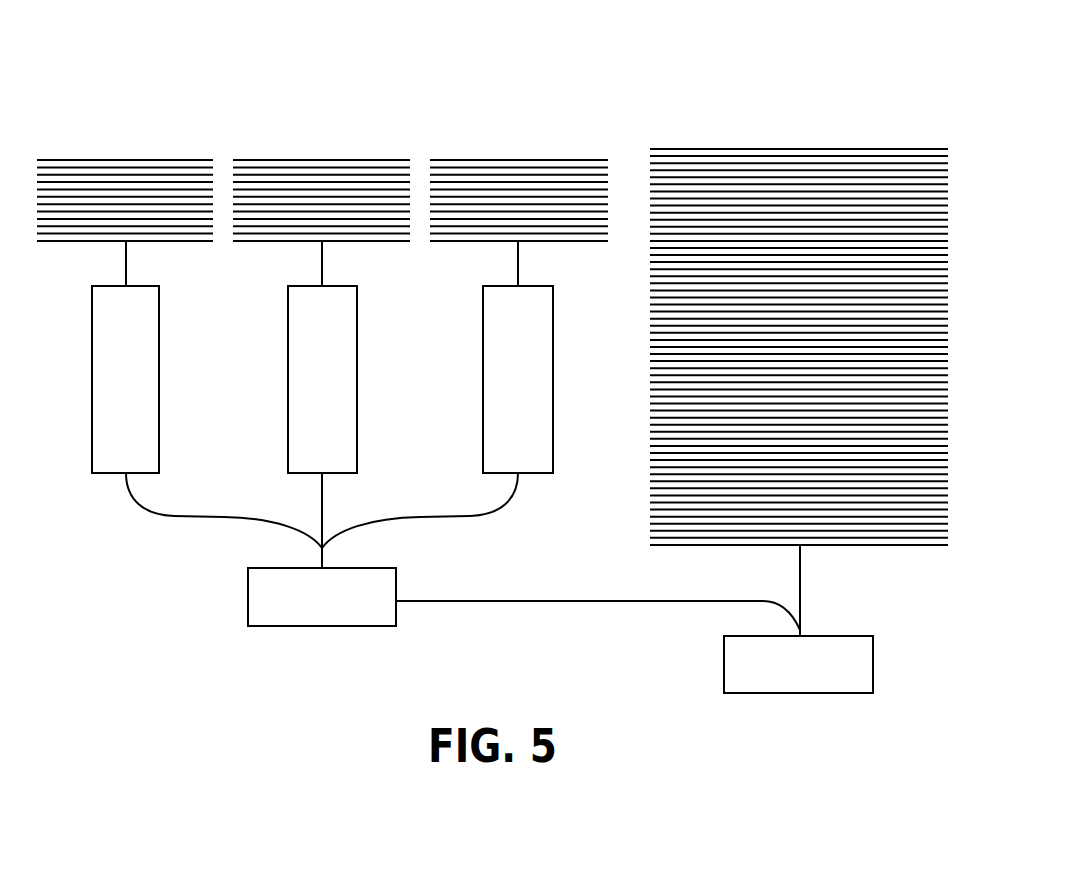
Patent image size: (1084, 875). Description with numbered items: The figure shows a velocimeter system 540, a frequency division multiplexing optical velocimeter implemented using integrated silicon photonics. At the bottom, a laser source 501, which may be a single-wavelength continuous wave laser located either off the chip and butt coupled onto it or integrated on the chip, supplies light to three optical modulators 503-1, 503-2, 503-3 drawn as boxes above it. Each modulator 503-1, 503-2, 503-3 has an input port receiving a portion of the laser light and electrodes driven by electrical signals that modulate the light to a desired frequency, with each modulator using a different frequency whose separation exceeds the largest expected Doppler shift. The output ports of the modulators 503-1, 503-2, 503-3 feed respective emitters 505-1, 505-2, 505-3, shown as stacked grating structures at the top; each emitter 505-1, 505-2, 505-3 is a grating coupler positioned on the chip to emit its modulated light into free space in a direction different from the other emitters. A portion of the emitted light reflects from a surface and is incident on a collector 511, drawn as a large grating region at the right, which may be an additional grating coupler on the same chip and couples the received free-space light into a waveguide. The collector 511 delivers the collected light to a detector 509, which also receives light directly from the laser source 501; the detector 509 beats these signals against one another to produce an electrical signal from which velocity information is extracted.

The velocimeter system 540 is at (188, 72).
The emitter 505-3 is at (130, 159).
The emitter 505-2 is at (335, 159).
The emitter 505-1 is at (532, 159).
The modulator 503-3 is at (91, 372).
The modulator 503-2 is at (287, 372).
The modulator 503-1 is at (482, 372).
The laser source 501 is at (247, 617).
The collector 511 is at (730, 148).
The detector 509 is at (723, 686).